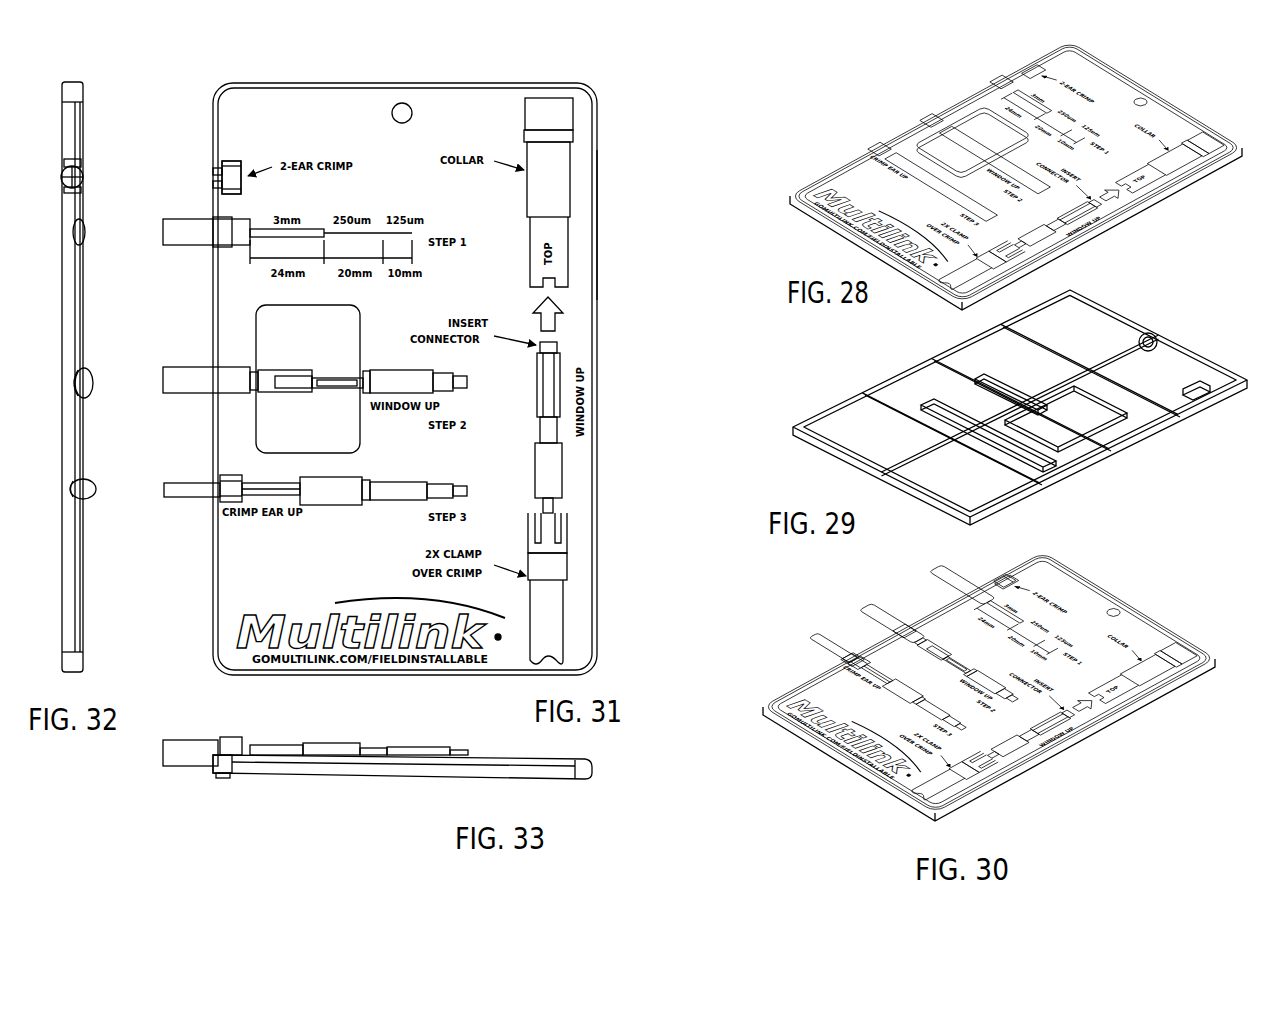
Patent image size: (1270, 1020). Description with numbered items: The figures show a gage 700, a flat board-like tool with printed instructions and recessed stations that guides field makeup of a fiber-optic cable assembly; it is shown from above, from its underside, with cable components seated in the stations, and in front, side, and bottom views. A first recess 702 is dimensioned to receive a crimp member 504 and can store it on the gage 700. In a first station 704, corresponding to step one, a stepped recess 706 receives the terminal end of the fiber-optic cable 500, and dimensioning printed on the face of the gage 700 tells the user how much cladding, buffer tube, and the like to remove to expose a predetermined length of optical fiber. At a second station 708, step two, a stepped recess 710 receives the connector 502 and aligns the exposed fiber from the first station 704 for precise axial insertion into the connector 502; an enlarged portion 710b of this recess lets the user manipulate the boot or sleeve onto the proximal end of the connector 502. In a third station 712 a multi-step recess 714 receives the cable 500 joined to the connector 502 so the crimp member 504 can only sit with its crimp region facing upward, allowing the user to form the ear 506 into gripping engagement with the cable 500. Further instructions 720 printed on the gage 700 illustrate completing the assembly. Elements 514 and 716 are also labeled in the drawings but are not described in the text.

In FIG. 31, the fiber-optic cable 500 is at (178, 245).
In FIG. 32, the fiber-optic cable 500 is at (81, 233).
In FIG. 33, the fiber-optic cable 500 is at (178, 760).
In FIG. 30, the fiber-optic cable 500 is at (957, 577).
In FIG. 31, the connector 502 is at (401, 372).
In FIG. 33, the connector 502 is at (407, 749).
In FIG. 30, the connector 502 is at (983, 693).
In FIG. 31, the crimp member 504 is at (221, 183).
In FIG. 32, the crimp member 504 is at (82, 175).
In FIG. 30, the crimp member 504 is at (1013, 563).
In FIG. 30, the ear 506 is at (851, 646).
In FIG. 31, the connector housing 514 is at (276, 368).
In FIG. 30, the connector housing 514 is at (921, 650).
In FIG. 31, the gage 700 is at (465, 86).
In FIG. 32, the gage 700 is at (73, 608).
In FIG. 33, the gage 700 is at (586, 777).
In FIG. 29, the gage 700 is at (840, 440).
In FIG. 30, the gage 700 is at (1145, 621).
In FIG. 31, the first recess 702 is at (248, 166).
In FIG. 31, the first station 704 is at (452, 222).
In FIG. 28, the first station 704 is at (1118, 160).
In FIG. 30, the first station 704 is at (1057, 619).
In FIG. 31, the stepped recess 706 is at (231, 248).
In FIG. 28, the stepped recess 706 is at (1001, 75).
In FIG. 31, the second station 708 is at (456, 438).
In FIG. 28, the second station 708 is at (1030, 190).
In FIG. 30, the second station 708 is at (1025, 662).
In FIG. 31, the stepped recess 710 is at (464, 390).
In FIG. 28, the stepped recess 710 is at (1028, 161).
In FIG. 31, the enlarged portion of the recess 710b is at (272, 453).
In FIG. 28, the enlarged portion of the recess 710b is at (963, 127).
In FIG. 31, the third station 712 is at (383, 516).
In FIG. 28, the third station 712 is at (924, 191).
In FIG. 30, the third station 712 is at (880, 699).
In FIG. 31, the multi-step recess 714 is at (391, 477).
In FIG. 28, the multi-step recess 714 is at (878, 142).
In FIG. 28, the edge notch 716 is at (945, 110).
In FIG. 31, the further instructions 720 is at (580, 220).
In FIG. 30, the further instructions 720 is at (1163, 688).